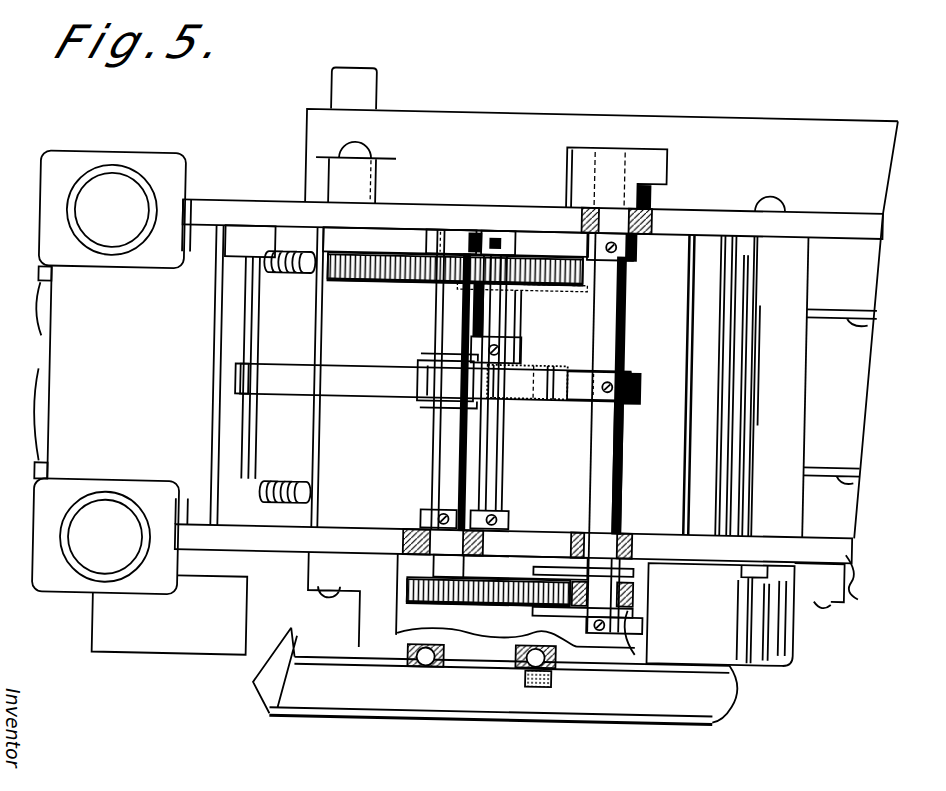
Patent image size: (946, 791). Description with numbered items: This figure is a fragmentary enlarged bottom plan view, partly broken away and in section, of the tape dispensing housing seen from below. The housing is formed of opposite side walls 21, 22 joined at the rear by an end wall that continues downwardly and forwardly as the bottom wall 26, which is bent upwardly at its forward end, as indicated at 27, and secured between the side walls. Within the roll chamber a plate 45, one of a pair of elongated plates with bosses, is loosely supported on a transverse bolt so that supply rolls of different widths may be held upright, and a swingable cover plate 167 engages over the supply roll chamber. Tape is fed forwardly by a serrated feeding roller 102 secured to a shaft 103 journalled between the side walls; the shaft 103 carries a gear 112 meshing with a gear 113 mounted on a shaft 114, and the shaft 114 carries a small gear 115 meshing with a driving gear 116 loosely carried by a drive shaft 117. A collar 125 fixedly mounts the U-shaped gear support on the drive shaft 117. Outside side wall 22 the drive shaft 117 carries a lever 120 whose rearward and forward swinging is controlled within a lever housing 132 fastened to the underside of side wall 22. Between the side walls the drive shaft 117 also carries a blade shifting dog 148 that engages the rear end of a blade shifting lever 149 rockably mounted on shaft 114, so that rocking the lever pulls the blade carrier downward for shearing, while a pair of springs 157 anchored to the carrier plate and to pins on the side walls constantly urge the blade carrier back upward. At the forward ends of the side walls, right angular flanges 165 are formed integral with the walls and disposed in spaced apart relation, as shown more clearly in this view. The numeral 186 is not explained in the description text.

The boss 186 is at (355, 76).
The lever housing 132 is at (489, 108).
The lever 120 is at (640, 154).
The side wall 22 is at (819, 213).
The swingable cover plate 167 is at (855, 263).
The plate 45 is at (841, 310).
The bottom wall 26 is at (799, 369).
The side wall 21 is at (833, 590).
The collar 125 is at (700, 705).
The driving gear 116 is at (499, 605).
The small gear 115 is at (417, 609).
The drive shaft 117 is at (613, 464).
The upwardly bent forward end 27 is at (636, 468).
The shaft 103 is at (501, 452).
The serrated feeding roller 102 is at (520, 400).
The blade shifting dog 148 is at (632, 367).
The blade shifting lever 149 is at (365, 386).
The shaft 114 is at (448, 323).
The gear 113 is at (380, 285).
The gear 112 is at (521, 291).
The springs 157 is at (285, 281).
The right angular flanges 165 is at (26, 372).